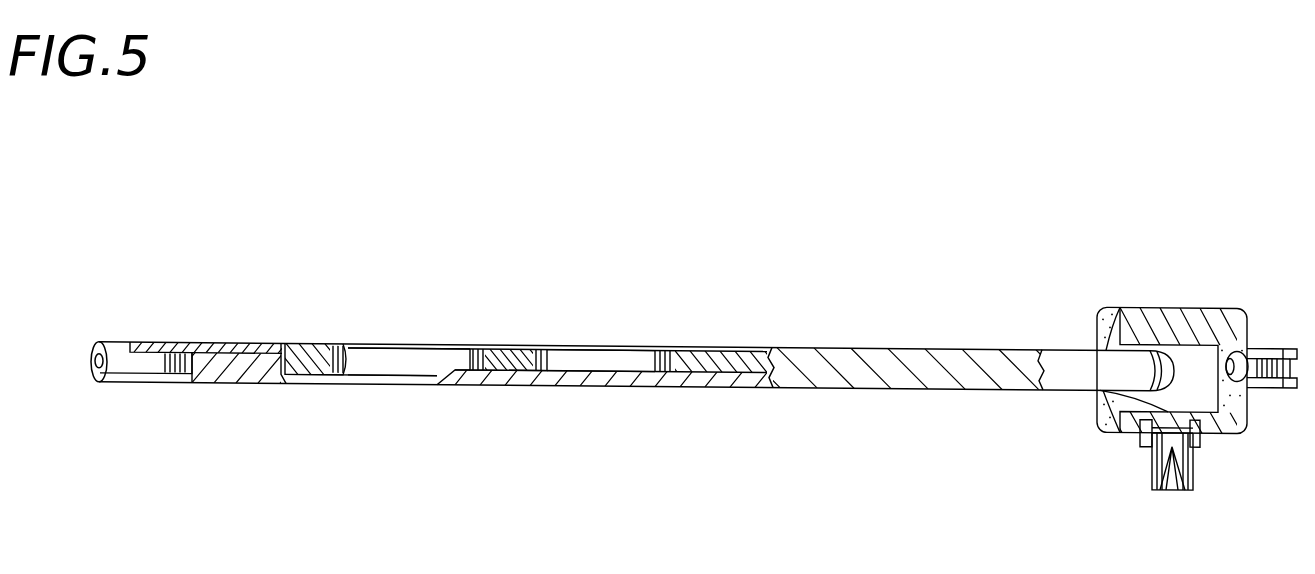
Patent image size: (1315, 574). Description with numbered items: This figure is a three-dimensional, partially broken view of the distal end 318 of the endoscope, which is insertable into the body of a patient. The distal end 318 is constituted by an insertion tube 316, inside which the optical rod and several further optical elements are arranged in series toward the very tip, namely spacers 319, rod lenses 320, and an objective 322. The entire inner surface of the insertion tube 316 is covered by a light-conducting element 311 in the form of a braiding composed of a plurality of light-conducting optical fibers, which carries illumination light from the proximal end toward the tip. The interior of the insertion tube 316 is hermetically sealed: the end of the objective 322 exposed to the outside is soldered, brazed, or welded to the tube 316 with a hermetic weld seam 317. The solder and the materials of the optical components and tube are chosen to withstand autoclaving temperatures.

The light-conducting element 311 is at (742, 350).
The insertion tube 316 is at (947, 370).
The hermetic weld seam 317 is at (92, 381).
The distal end 318 is at (263, 377).
The spacers 319 is at (677, 382).
The rod lenses 320 is at (603, 358).
The objective 322 is at (139, 360).